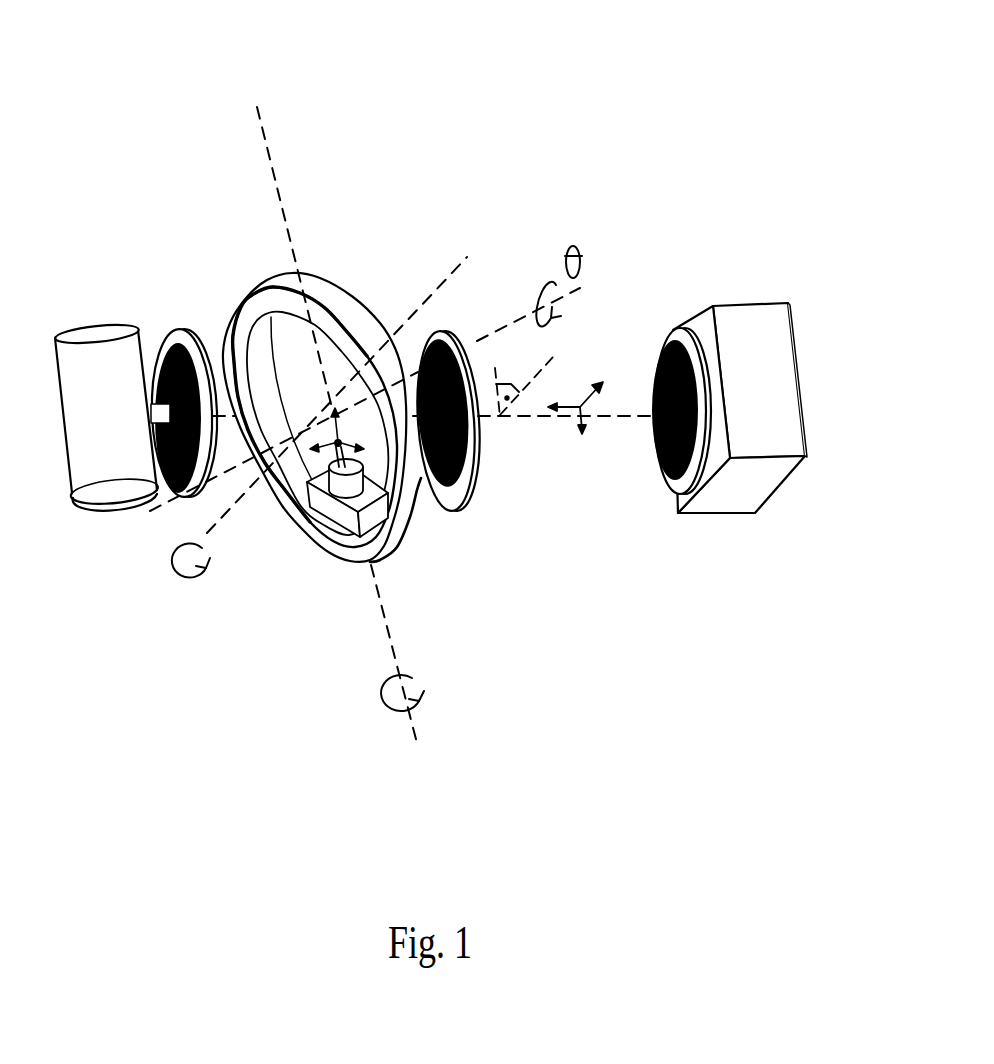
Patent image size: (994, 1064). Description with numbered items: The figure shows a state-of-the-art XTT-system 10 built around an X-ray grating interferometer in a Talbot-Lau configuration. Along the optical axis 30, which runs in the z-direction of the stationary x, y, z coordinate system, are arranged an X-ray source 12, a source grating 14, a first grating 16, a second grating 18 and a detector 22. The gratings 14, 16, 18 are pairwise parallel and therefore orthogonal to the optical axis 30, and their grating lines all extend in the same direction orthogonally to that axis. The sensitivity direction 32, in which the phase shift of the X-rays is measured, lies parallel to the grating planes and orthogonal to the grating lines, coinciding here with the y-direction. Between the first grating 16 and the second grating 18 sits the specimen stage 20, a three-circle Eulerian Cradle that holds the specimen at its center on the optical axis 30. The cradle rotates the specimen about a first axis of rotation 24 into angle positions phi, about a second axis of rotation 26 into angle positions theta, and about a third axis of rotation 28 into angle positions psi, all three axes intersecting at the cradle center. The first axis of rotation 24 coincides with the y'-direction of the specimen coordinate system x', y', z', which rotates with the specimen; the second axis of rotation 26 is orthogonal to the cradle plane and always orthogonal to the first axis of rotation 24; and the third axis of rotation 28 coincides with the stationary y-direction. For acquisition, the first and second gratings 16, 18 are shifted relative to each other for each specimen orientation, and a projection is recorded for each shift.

The XTT-system 10 is at (574, 92).
The X-ray source 12 is at (88, 328).
The source grating 14 is at (177, 330).
The first grating 16 is at (443, 332).
The second grating 18 is at (680, 330).
The specimen stage 20 is at (370, 258).
The detector 22 is at (757, 304).
The first axis of rotation 24 is at (410, 717).
The second axis of rotation 26 is at (535, 309).
The third axis of rotation 28 is at (210, 528).
The optical axis 30 is at (597, 420).
The sensitivity direction 32 is at (542, 378).